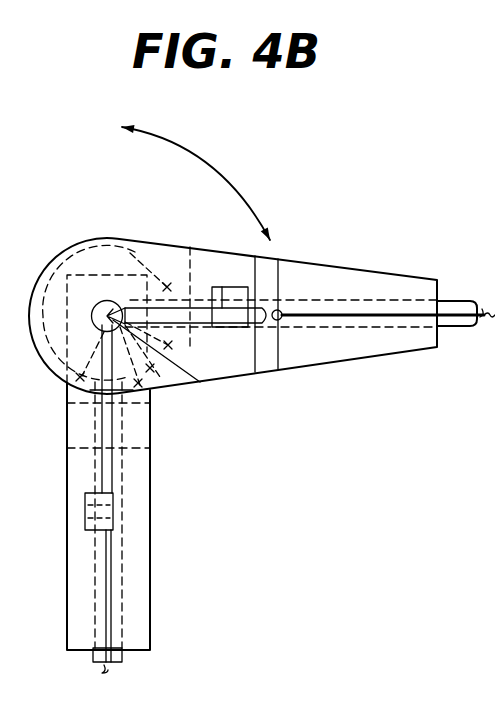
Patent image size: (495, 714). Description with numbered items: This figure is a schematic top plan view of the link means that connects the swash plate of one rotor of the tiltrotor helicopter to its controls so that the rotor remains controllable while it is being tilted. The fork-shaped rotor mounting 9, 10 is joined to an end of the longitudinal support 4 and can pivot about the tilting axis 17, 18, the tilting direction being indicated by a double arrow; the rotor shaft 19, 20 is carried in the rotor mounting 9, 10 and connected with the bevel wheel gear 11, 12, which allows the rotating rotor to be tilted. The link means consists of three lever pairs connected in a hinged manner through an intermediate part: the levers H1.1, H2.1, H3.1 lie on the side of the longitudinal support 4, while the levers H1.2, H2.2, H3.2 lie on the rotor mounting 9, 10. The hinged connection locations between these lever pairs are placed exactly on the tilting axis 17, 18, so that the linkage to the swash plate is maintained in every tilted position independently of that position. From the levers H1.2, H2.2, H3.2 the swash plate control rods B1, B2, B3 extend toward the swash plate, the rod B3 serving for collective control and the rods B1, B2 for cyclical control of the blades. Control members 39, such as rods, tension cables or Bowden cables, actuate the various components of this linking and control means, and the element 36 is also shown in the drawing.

The longitudinal support 4 is at (145, 539).
The fork-shaped rotor mounting 9 is at (233, 303).
The fork-shaped rotor mounting 10 is at (347, 272).
The bevel wheel gear 11 is at (157, 354).
The bevel wheel gear 12 is at (170, 347).
The tilting axis 17 is at (128, 259).
The tilting axis 18 is at (107, 313).
The rotor shaft 19 is at (463, 279).
The rotor shaft 20 is at (464, 304).
The lower rod end 36 is at (122, 658).
The control members 39 is at (110, 588).
The swash plate control rod B1 is at (388, 366).
The swash plate control rod B2 is at (388, 366).
The swash plate control rod B3 is at (412, 315).
The lever H1.1 is at (230, 436).
The lever H2.1 is at (230, 436).
The lever H3.1 is at (110, 478).
The lever H1.2 is at (316, 371).
The lever H2.2 is at (316, 371).
The lever H3.2 is at (227, 322).